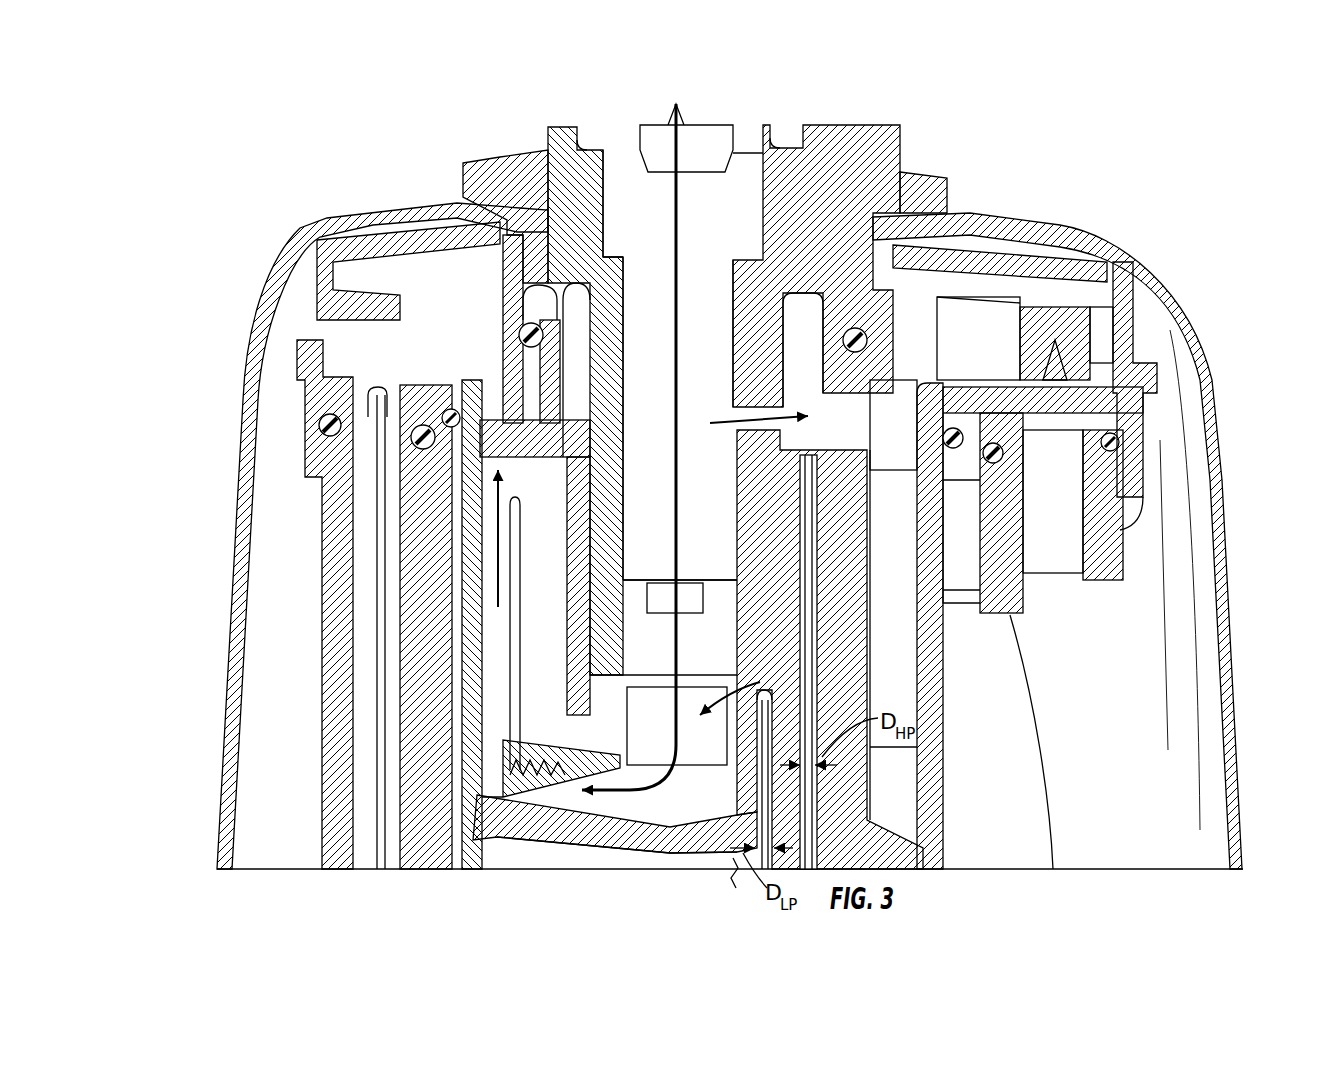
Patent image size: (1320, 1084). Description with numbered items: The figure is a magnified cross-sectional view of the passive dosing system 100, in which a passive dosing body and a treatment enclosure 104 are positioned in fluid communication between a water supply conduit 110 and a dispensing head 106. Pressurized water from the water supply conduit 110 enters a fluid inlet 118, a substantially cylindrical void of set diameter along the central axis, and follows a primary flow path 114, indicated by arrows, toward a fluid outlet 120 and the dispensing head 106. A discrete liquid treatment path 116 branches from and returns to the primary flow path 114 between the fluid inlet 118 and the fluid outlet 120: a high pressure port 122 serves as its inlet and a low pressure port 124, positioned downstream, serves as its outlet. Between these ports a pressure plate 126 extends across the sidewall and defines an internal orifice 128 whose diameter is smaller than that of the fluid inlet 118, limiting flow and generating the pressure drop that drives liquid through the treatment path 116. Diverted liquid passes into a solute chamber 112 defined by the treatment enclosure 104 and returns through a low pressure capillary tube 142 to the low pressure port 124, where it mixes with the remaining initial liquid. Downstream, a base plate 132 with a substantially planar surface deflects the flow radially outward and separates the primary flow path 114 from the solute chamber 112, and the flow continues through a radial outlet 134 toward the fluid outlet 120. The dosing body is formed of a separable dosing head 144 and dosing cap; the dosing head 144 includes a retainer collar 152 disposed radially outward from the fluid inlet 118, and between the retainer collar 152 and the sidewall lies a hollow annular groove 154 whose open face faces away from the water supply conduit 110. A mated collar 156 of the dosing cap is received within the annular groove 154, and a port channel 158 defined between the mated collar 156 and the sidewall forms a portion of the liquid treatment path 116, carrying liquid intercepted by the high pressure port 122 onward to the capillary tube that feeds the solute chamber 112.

The passive dosing system 100 is at (340, 175).
The treatment enclosure 104 is at (535, 785).
The dispensing head 106 is at (245, 432).
The water supply conduit 110 is at (633, 140).
The solute chamber 112 is at (571, 853).
The primary flow path 114 is at (688, 222).
The liquid treatment path 116 is at (765, 402).
The fluid inlet 118 is at (725, 298).
The fluid outlet 120 is at (909, 381).
The high pressure port 122 is at (810, 325).
The low pressure port 124 is at (787, 697).
The pressure plate 126 is at (727, 580).
The internal orifice 128 is at (660, 590).
The base plate 132 is at (620, 832).
The radial outlet 134 is at (535, 777).
The low pressure capillary tube 142 is at (769, 813).
The dosing head 144 is at (767, 680).
The retainer collar 152 is at (515, 338).
The annular groove 154 is at (540, 268).
The mated collar 156 is at (853, 303).
The port channel 158 is at (805, 247).